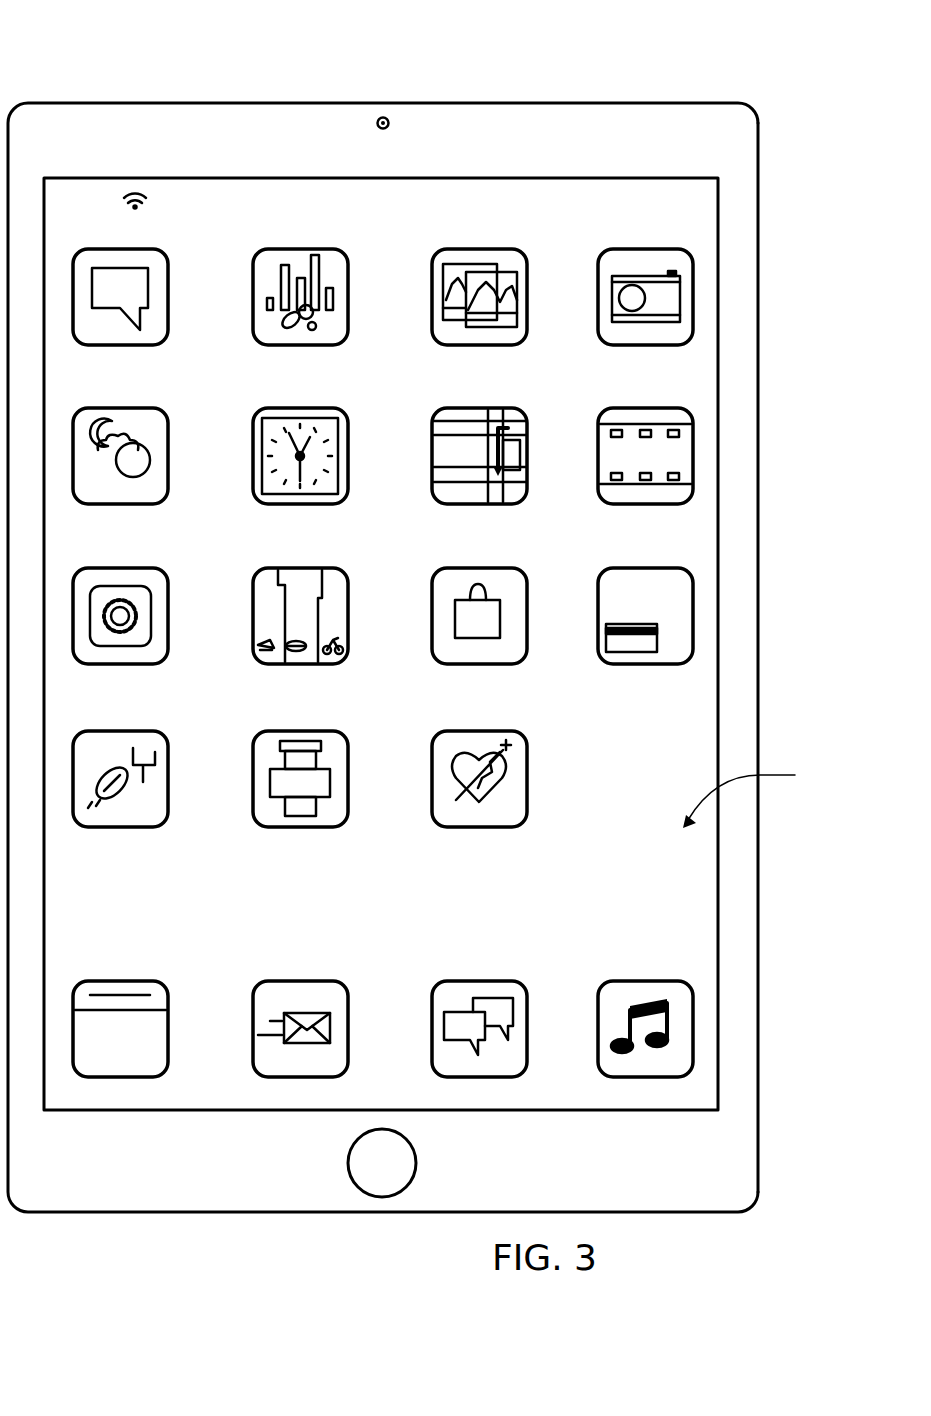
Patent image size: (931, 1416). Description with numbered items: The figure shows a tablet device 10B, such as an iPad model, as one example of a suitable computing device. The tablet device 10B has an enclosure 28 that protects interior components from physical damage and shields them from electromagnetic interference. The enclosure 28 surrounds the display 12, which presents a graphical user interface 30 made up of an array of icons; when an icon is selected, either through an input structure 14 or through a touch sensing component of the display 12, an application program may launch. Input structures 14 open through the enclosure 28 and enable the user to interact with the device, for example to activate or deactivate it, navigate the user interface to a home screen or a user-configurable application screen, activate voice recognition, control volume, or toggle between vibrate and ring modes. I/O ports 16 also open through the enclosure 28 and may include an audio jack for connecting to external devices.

The tablet device 10B is at (130, 33).
The display 12 is at (718, 872).
The input structure 14 is at (652, 103).
The I/O port 16 is at (115, 103).
The enclosure 28 is at (758, 620).
The graphical user interface 30 is at (754, 795).